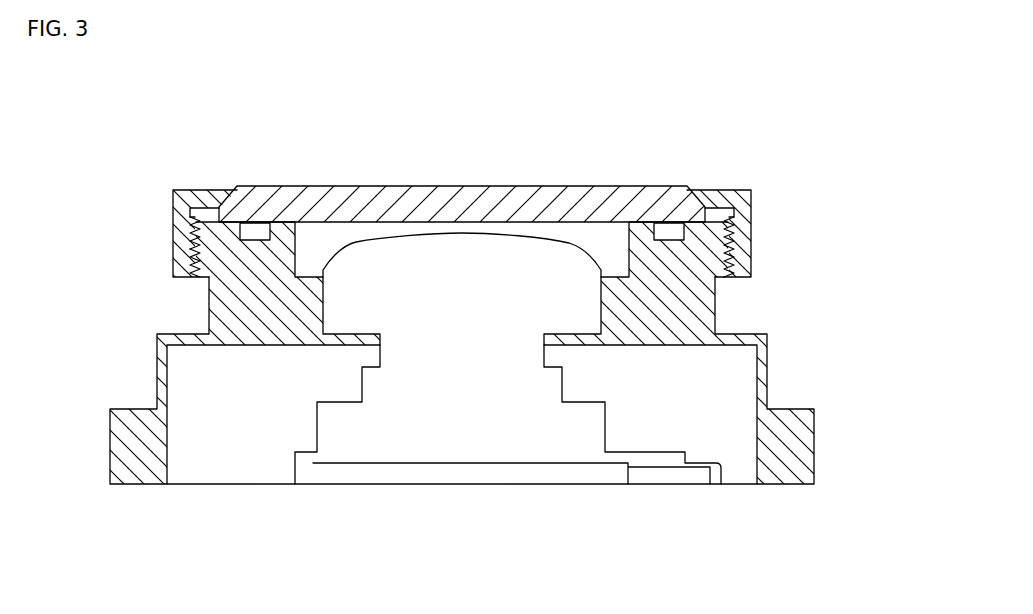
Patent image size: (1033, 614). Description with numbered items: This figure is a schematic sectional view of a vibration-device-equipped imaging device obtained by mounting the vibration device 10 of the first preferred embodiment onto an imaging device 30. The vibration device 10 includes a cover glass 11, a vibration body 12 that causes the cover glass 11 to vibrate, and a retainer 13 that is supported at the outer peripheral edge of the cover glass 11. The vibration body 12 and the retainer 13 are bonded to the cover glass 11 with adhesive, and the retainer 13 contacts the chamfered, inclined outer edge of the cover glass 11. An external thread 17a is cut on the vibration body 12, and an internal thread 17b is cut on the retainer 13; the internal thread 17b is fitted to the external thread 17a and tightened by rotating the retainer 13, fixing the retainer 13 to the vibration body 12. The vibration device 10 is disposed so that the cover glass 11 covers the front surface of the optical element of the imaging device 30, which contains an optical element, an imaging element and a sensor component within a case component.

The vibration device 10 is at (757, 133).
The cover glass 11 is at (597, 190).
The vibration body 12 is at (767, 352).
The retainer 13 is at (747, 232).
The external thread 17a is at (185, 245).
The internal thread 17b is at (204, 270).
The imaging device 30 is at (472, 397).